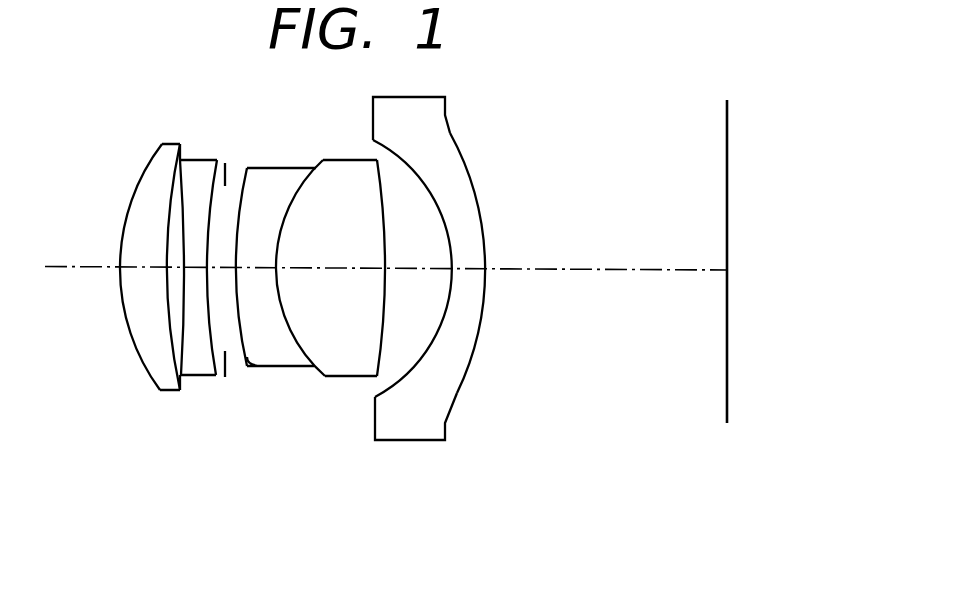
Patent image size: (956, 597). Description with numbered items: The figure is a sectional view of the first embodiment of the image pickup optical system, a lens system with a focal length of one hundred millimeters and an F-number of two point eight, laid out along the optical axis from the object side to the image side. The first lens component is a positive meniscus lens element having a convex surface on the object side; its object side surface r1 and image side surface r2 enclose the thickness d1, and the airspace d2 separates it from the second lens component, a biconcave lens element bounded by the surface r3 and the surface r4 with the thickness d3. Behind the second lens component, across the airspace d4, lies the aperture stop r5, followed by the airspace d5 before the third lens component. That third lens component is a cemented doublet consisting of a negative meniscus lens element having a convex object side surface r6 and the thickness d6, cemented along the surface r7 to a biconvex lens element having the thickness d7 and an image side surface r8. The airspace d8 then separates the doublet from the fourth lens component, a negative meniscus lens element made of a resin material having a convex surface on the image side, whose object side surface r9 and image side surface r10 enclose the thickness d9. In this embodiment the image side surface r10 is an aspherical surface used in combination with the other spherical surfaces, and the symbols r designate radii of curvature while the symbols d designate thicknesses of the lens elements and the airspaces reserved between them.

The thickness of first lens component d1 is at (123, 298).
The airspace between first and second lens components d2 is at (175, 263).
The thickness of second lens component d3 is at (164, 291).
The airspace between second lens component and aperture stop d4 is at (213, 265).
The airspace between aperture stop and third lens component d5 is at (241, 261).
The thickness of negative meniscus element of third lens component d6 is at (280, 283).
The thickness of biconvex element of third lens component d7 is at (348, 309).
The airspace between third and fourth lens components d8 is at (415, 267).
The thickness of fourth lens component d9 is at (445, 300).
The object side surface of first lens component r1 is at (138, 350).
The image side surface of first lens component r2 is at (173, 353).
The object side surface of second lens component r3 is at (187, 378).
The image side surface of second lens component r4 is at (207, 377).
The aperture stop r5 is at (227, 380).
The object side surface of third lens component r6 is at (265, 367).
The cemented surface of third lens component r7 is at (300, 367).
The image side surface of third lens component r8 is at (382, 360).
The object side surface of fourth lens component r9 is at (402, 383).
The image side surface of fourth lens component r10 is at (457, 393).